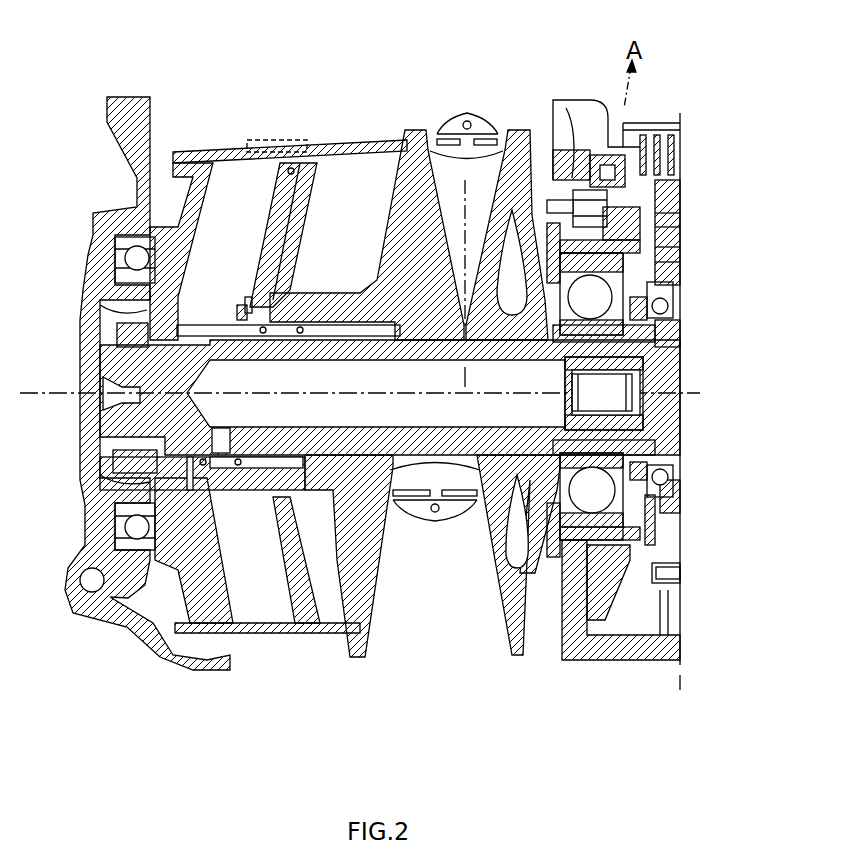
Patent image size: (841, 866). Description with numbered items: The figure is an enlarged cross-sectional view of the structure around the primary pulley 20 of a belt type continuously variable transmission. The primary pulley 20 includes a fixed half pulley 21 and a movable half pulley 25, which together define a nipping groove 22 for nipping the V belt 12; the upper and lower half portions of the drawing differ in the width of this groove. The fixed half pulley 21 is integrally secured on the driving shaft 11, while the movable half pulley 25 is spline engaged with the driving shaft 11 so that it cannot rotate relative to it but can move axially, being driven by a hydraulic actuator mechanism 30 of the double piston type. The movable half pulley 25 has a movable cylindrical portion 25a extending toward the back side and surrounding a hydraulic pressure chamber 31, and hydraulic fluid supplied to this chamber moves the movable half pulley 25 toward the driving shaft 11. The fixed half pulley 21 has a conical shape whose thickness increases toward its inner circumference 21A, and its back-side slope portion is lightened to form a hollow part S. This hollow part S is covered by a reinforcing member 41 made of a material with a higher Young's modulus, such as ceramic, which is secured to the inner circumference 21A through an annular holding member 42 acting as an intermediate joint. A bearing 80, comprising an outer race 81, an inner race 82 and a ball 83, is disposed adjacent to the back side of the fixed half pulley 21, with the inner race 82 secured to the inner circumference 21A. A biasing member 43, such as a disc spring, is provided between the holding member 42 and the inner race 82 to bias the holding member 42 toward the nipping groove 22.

The driving shaft 11 is at (110, 362).
The V belt 12 is at (467, 108).
The primary pulley 20 is at (553, 93).
The fixed half pulley 21 is at (518, 122).
The inner circumference 21A is at (495, 353).
The nipping groove 22 is at (462, 191).
The movable half pulley 25 is at (412, 128).
The movable cylindrical portion 25a is at (372, 142).
The hydraulic actuator mechanism 30 is at (232, 138).
The hydraulic pressure chamber 31 is at (362, 234).
The reinforcing member 41 is at (650, 257).
The holding member 42 is at (530, 357).
The biasing member 43 is at (652, 343).
The bearing 80 is at (674, 395).
The outer race 81 is at (612, 262).
The inner race 82 is at (640, 316).
The ball 83 is at (668, 290).
The hollow part S is at (519, 288).